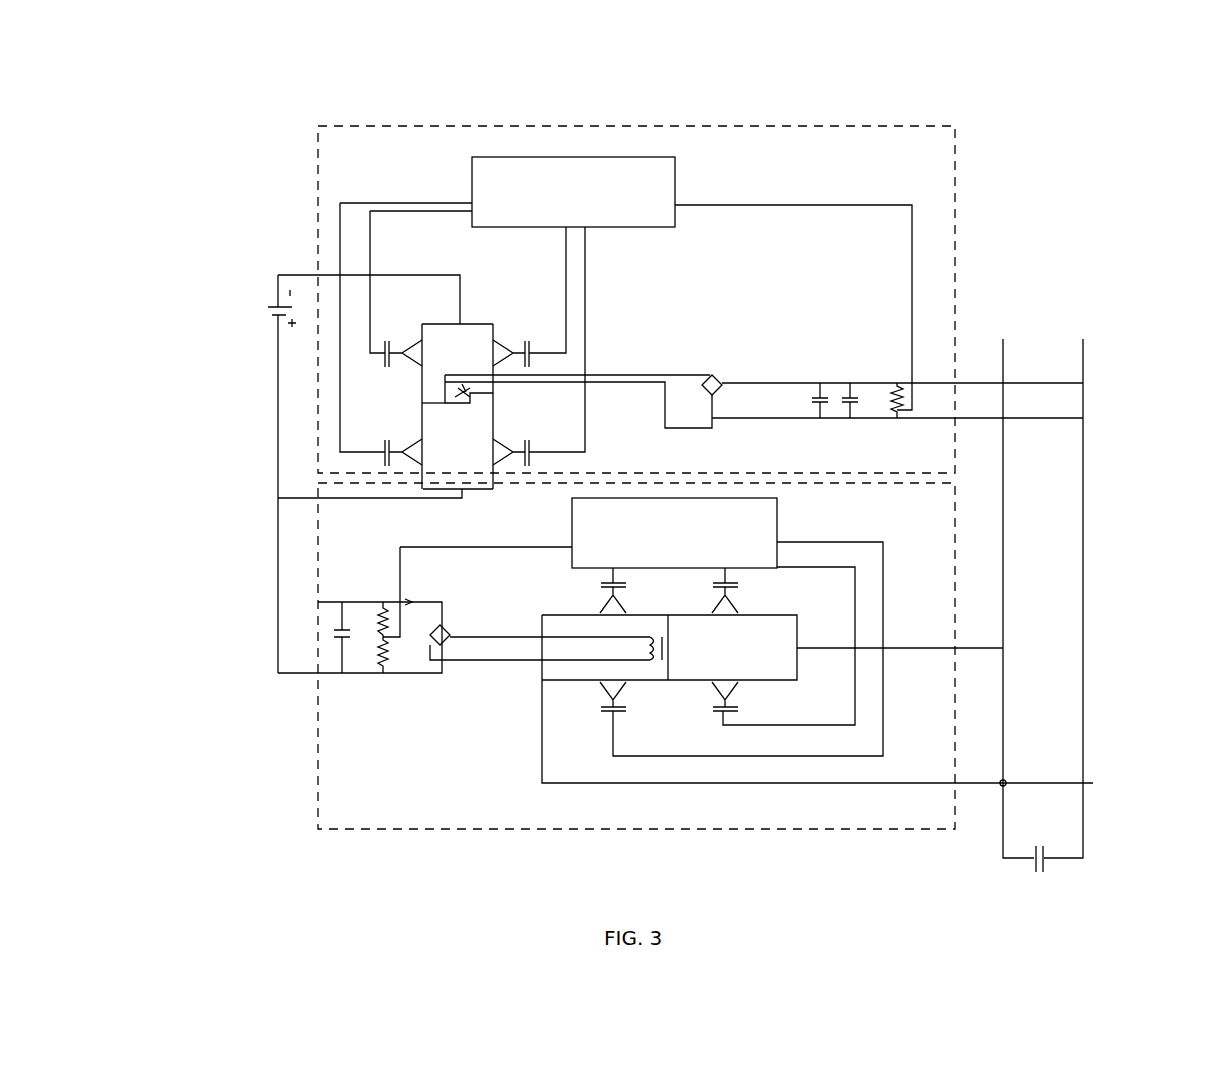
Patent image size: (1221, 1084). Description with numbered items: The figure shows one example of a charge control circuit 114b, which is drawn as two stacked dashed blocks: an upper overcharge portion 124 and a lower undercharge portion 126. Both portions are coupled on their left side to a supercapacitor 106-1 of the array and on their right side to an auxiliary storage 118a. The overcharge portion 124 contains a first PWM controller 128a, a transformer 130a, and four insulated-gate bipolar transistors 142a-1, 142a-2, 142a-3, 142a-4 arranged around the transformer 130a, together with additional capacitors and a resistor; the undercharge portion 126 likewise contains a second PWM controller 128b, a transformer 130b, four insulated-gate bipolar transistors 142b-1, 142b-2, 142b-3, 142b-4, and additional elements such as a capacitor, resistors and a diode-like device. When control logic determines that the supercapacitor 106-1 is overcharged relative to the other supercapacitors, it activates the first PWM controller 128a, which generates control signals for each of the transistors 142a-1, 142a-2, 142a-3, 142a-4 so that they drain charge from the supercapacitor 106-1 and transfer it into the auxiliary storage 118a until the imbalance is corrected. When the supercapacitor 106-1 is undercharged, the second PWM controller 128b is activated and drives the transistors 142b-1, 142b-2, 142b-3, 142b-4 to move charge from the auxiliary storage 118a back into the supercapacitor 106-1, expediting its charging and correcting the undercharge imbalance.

The charge control circuit 114b is at (1068, 156).
The overcharge portion 124 is at (957, 262).
The undercharge portion 126 is at (318, 760).
The supercapacitor 106-1 is at (278, 300).
The first PWM controller 128a is at (573, 192).
The second PWM controller 128b is at (674, 533).
The transformer 130a is at (455, 392).
The transformer 130b is at (655, 648).
The insulated-gate bipolar transistor 142a-1 is at (385, 352).
The insulated-gate bipolar transistor 142a-2 is at (385, 452).
The insulated-gate bipolar transistor 142a-3 is at (529, 352).
The insulated-gate bipolar transistor 142a-4 is at (567, 422).
The insulated-gate bipolar transistor 142b-1 is at (609, 587).
The insulated-gate bipolar transistor 142b-2 is at (735, 587).
The insulated-gate bipolar transistor 142b-3 is at (606, 713).
The insulated-gate bipolar transistor 142b-4 is at (718, 713).
The auxiliary storage 118a is at (1044, 855).